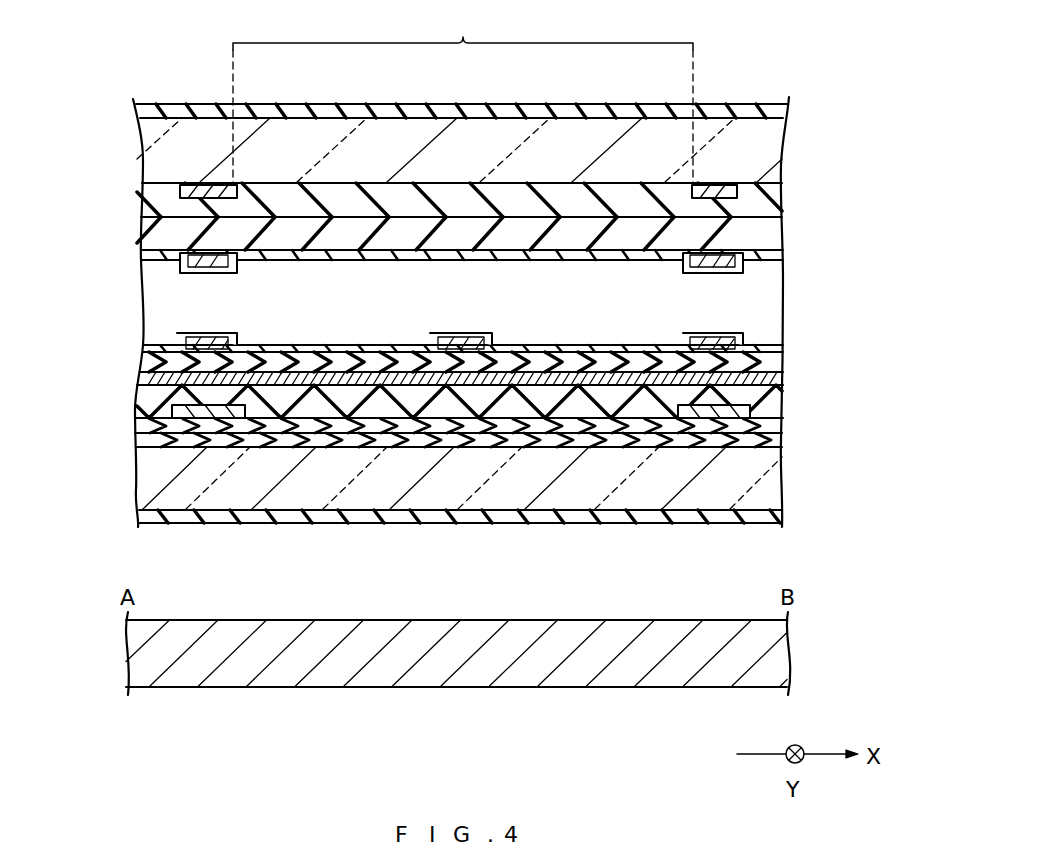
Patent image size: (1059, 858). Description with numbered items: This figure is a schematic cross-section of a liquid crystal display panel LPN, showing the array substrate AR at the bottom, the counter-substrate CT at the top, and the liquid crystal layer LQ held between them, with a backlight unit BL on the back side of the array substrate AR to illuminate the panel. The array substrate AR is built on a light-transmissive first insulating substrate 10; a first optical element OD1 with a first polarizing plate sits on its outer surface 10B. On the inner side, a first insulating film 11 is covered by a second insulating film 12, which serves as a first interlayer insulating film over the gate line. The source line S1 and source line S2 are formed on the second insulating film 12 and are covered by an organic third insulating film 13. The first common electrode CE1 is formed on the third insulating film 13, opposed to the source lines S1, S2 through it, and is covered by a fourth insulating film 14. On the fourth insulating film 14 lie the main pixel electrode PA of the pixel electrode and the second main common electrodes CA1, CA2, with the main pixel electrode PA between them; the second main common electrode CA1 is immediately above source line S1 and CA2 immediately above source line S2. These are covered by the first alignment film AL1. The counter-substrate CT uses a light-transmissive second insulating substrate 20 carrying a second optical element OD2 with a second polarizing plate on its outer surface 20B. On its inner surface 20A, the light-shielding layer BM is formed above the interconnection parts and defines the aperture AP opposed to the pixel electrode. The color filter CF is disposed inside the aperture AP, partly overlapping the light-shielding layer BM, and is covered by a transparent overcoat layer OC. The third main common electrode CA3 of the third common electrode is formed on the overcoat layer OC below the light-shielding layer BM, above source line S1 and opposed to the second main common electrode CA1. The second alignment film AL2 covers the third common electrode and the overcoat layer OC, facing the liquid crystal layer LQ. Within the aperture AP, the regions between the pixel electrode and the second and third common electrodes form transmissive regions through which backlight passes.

The liquid crystal display panel LPN is at (796, 92).
The counter-substrate CT is at (146, 150).
The array substrate AR is at (139, 478).
The aperture AP is at (463, 95).
The second optical element OD2 is at (786, 111).
The first optical element OD1 is at (780, 516).
The second insulating substrate 20 is at (768, 141).
The inner surface of the second insulating substrate 20A is at (180, 192).
The outer surface of the second insulating substrate 20B is at (180, 108).
The first insulating substrate 10 is at (765, 479).
The outer surface of the first insulating substrate 10B is at (181, 517).
The light-shielding layer BM is at (200, 213).
The color filter CF is at (770, 206).
The overcoat layer OC is at (770, 236).
The second alignment film AL2 is at (755, 258).
The first alignment film AL1 is at (760, 349).
The liquid crystal layer LQ is at (765, 313).
The third main common electrode CA3 is at (185, 266).
The second main common electrode CA1 is at (195, 338).
The second main common electrode CA2 is at (712, 338).
The main pixel electrode PA is at (465, 338).
The first common electrode CE1 is at (640, 388).
The fourth insulating film 14 is at (770, 365).
The third insulating film 13 is at (775, 394).
The second insulating film 12 is at (775, 426).
The first insulating film 11 is at (770, 441).
The source line S1 is at (222, 420).
The source line S2 is at (724, 420).
The backlight unit BL is at (782, 665).